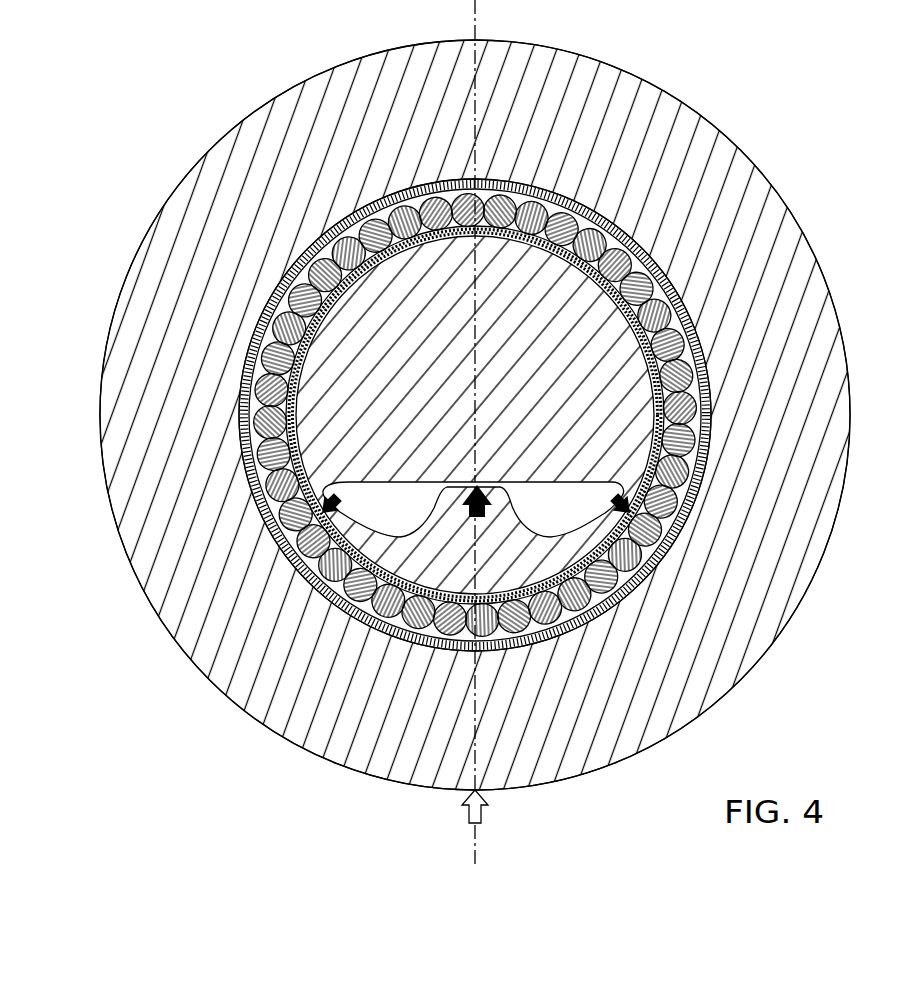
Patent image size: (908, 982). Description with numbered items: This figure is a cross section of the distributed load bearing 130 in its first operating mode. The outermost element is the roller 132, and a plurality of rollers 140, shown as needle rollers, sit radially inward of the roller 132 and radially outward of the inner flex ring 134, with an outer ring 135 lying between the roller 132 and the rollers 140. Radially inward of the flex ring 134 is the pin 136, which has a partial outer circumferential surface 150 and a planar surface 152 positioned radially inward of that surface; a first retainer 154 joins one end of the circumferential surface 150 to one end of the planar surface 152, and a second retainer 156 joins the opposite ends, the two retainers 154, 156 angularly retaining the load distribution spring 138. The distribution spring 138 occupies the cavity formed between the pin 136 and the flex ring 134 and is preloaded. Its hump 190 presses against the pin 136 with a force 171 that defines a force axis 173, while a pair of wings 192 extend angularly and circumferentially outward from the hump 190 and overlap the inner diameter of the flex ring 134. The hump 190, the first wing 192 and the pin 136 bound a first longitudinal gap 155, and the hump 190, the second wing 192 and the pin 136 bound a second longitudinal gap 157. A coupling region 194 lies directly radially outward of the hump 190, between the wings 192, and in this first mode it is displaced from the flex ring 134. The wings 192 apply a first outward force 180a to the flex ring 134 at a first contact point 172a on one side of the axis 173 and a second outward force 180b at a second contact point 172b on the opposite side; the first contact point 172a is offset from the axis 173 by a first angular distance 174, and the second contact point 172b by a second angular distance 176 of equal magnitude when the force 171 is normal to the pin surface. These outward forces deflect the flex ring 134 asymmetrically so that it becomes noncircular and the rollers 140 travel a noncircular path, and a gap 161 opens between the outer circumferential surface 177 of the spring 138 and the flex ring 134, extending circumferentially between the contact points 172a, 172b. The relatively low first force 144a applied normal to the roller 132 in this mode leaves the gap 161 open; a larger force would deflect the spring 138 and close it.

The bearing 130 is at (208, 76).
The roller 132 is at (222, 690).
The inner flex ring 134 is at (385, 243).
The outer ring 135 is at (608, 212).
The pin 136 is at (497, 372).
The load distribution spring 138 is at (492, 557).
The rollers 140 is at (472, 200).
The first force 144a is at (481, 820).
The partial outer circumferential surface 150 is at (557, 248).
The planar surface 152 is at (550, 480).
The first retainer 154 is at (332, 500).
The first longitudinal gap 155 is at (423, 514).
The second retainer 156 is at (627, 500).
The second longitudinal gap 157 is at (576, 514).
The gap 161 is at (403, 633).
The force 171 is at (484, 486).
The first contact point 172a is at (273, 517).
The second contact point 172b is at (655, 497).
The force axis 173 is at (478, 12).
The first angular distance 174 is at (299, 338).
The right wall portion 176 is at (647, 352).
The outer circumferential surface 177 is at (516, 592).
The first outward force 180a is at (333, 583).
The second outward force 180b is at (662, 533).
The hump 190 is at (450, 486).
The wings 192 is at (392, 480).
The coupling region 194 is at (490, 640).